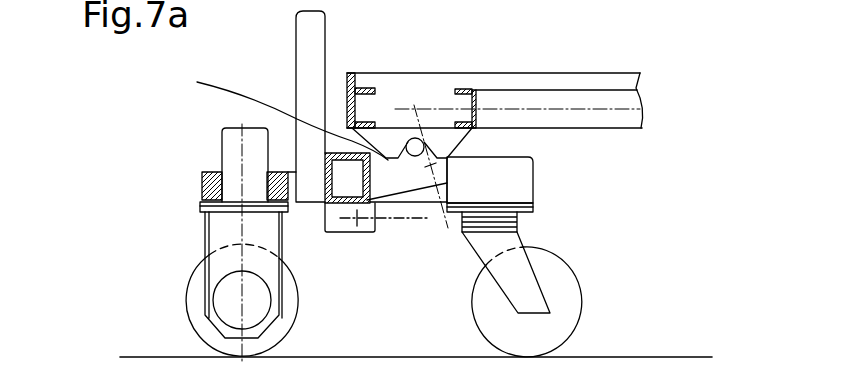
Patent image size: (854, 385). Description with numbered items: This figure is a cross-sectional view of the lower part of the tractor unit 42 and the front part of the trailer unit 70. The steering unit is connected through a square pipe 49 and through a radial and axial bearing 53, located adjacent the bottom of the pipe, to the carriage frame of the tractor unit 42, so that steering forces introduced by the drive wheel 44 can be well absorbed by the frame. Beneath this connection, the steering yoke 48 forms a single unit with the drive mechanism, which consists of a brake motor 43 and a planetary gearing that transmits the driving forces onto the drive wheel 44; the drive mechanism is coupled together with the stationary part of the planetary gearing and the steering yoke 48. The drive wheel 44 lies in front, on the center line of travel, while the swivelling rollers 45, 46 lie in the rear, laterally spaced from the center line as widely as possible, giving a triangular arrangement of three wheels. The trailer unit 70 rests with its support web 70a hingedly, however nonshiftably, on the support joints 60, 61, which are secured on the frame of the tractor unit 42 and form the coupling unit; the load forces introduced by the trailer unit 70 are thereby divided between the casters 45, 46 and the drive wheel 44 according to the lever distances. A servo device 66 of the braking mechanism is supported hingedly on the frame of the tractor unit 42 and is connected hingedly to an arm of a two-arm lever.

The tractor unit 42 is at (517, 183).
The brake motor 43 is at (233, 308).
The drive wheel 44 is at (192, 297).
The swivelling roller 45 is at (598, 294).
The swivelling roller 46 is at (567, 320).
The steering yoke 48 is at (218, 227).
The square pipe 49 is at (222, 143).
The radial and axial bearing 53 is at (202, 177).
The support joint 60 is at (229, 112).
The support joint 61 is at (197, 82).
The servo device 66 is at (373, 101).
The trailer unit 70 is at (628, 95).
The support web 70a is at (450, 140).